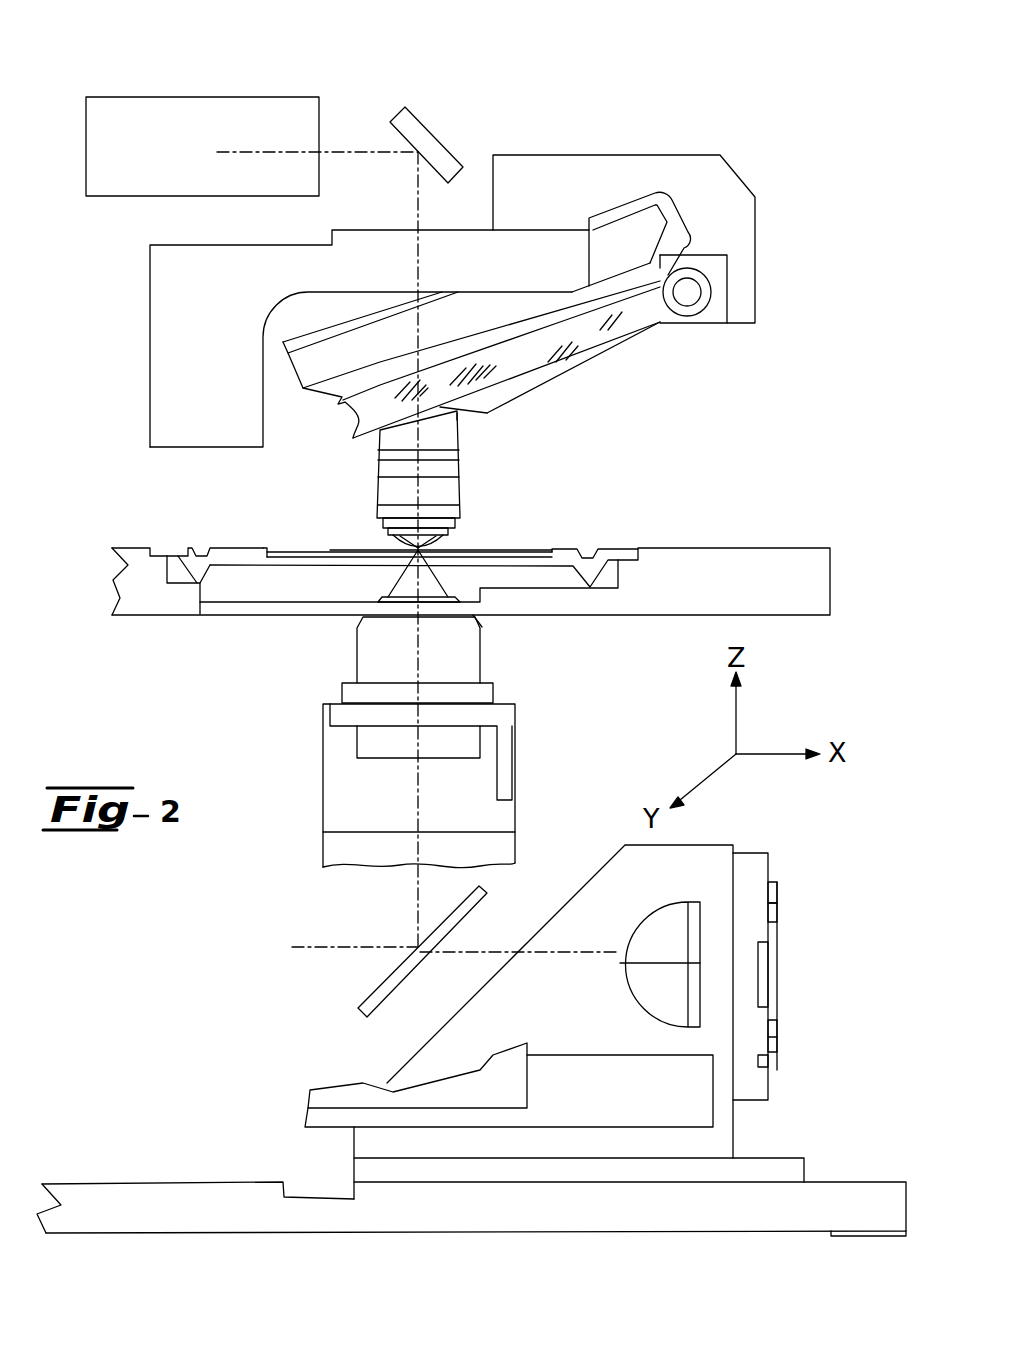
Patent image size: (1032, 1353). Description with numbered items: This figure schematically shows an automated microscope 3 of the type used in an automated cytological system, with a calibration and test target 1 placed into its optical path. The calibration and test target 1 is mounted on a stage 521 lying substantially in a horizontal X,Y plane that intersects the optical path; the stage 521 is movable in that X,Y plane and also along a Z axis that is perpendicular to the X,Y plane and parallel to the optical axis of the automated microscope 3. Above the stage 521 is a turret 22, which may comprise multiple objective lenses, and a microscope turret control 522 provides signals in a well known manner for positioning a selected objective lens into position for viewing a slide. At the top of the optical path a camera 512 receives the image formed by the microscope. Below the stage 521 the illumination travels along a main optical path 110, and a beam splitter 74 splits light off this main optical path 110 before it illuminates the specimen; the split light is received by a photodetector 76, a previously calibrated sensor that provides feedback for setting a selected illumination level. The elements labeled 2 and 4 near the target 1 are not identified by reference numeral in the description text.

The camera 512 is at (250, 96).
The microscope turret control 522 is at (677, 224).
The turret 22 is at (633, 332).
The automated microscope 3 is at (462, 448).
The focal point 4 is at (410, 548).
The slide 2 is at (422, 548).
The calibration and test target 1 is at (462, 548).
The stage 521 is at (782, 548).
The main optical path 110 is at (412, 843).
The beam splitter 74 is at (367, 993).
The photodetector 76 is at (778, 968).